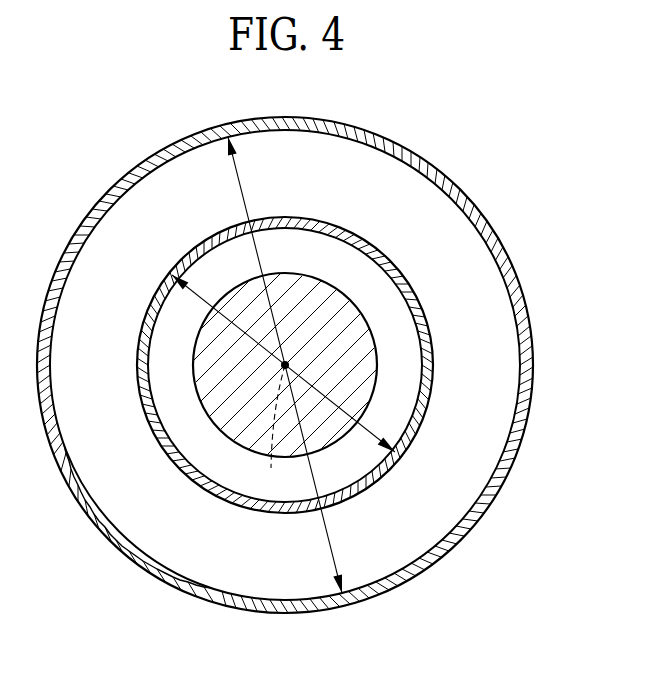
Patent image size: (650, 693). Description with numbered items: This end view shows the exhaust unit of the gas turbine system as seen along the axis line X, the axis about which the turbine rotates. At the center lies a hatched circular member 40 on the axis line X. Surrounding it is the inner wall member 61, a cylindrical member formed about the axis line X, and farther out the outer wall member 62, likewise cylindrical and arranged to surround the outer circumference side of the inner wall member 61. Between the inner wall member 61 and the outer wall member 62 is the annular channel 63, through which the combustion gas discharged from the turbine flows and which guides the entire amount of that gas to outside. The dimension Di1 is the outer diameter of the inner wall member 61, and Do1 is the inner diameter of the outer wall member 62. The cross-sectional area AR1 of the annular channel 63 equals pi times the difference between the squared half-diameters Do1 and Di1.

The core conductor 40 is at (213, 394).
The inner wall member 61 is at (395, 277).
The outer wall member 62 is at (490, 505).
The annular channel 63 is at (170, 568).
The axis line X is at (272, 430).
The inner diameter of the outer wall member Do1 is at (285, 365).
The outer diameter of the inner wall member Di1 is at (283, 355).
The cross-sectional area of the annular channel AR1 is at (303, 572).